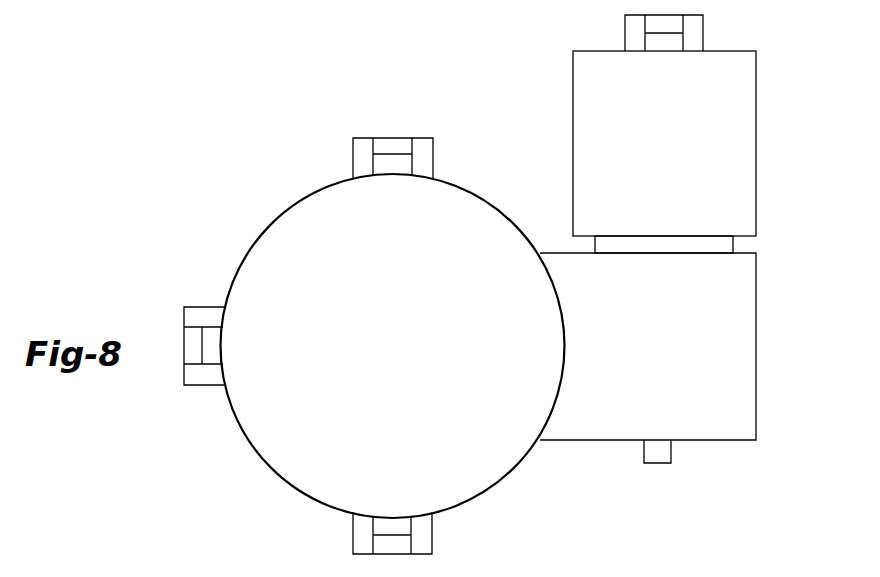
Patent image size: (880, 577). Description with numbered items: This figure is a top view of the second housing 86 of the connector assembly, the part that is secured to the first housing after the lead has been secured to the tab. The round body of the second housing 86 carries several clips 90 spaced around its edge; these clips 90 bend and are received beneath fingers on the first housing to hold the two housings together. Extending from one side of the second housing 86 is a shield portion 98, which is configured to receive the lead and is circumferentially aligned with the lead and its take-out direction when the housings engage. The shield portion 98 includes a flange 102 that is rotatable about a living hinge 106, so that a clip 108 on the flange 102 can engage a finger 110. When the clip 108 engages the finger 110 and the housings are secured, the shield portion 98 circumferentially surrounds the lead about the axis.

The second housing 86 is at (293, 205).
The clips 90 is at (432, 536).
The shield portion 98 is at (756, 223).
The flange 102 is at (756, 98).
The living hinge 106 is at (595, 245).
The clip 108 is at (703, 33).
The finger 110 is at (672, 448).